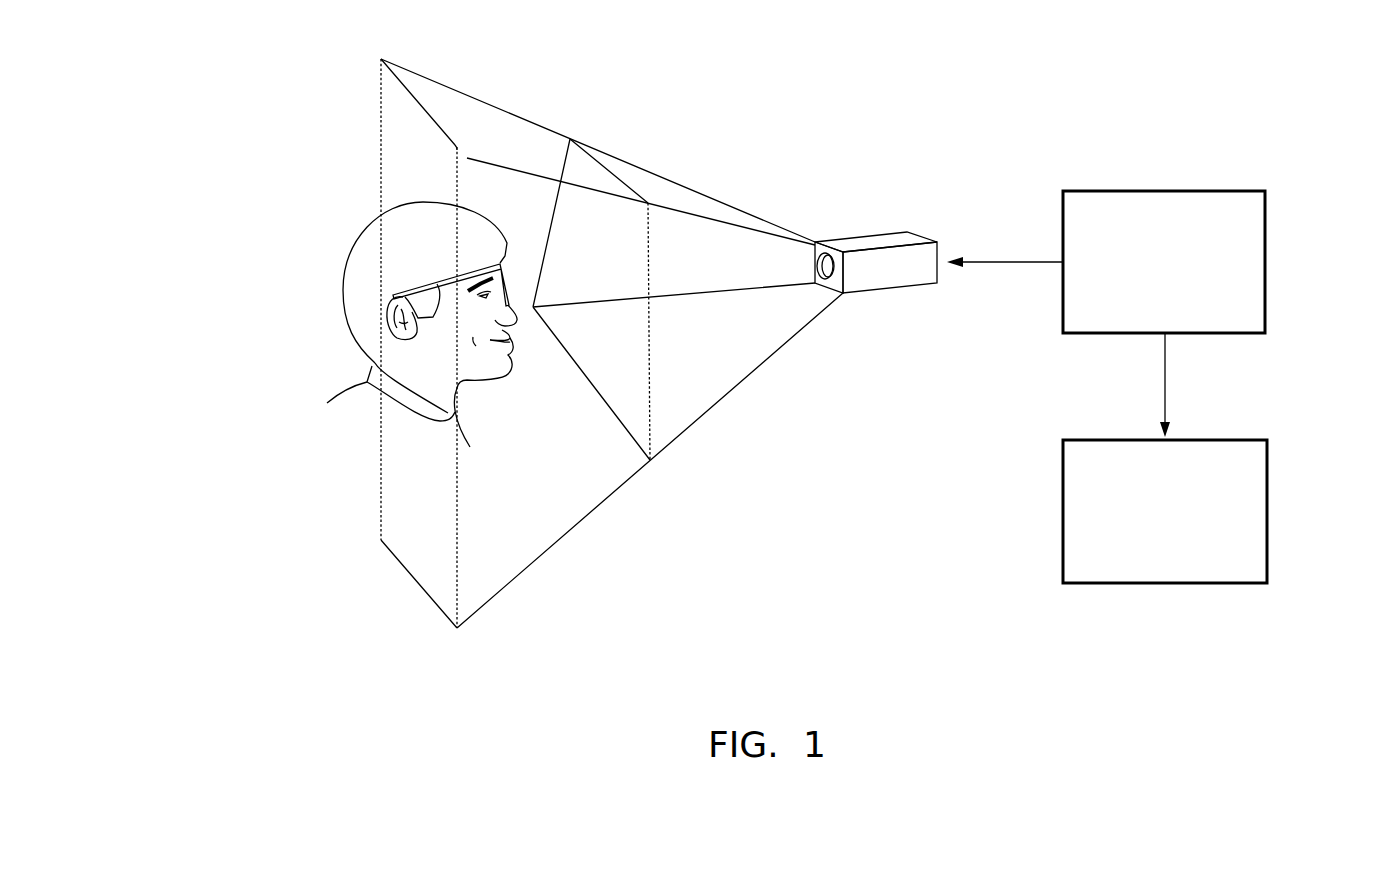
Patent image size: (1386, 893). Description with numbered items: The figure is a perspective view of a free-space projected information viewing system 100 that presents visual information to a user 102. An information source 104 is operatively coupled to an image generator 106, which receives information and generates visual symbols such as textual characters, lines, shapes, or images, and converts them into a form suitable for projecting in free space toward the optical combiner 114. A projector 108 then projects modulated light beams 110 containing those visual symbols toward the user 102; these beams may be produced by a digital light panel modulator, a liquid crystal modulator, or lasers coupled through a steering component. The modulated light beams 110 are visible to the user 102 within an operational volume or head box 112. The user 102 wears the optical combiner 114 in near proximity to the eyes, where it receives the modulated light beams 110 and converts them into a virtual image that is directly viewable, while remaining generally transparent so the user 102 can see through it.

The projected information viewing system 100 is at (316, 141).
The user 102 is at (343, 272).
The information source 104 is at (1267, 518).
The image generator 106 is at (1265, 252).
The projector 108 is at (875, 232).
The modulated light beams 110 is at (692, 188).
The head box 112 is at (527, 513).
The optical combiner 114 is at (507, 277).